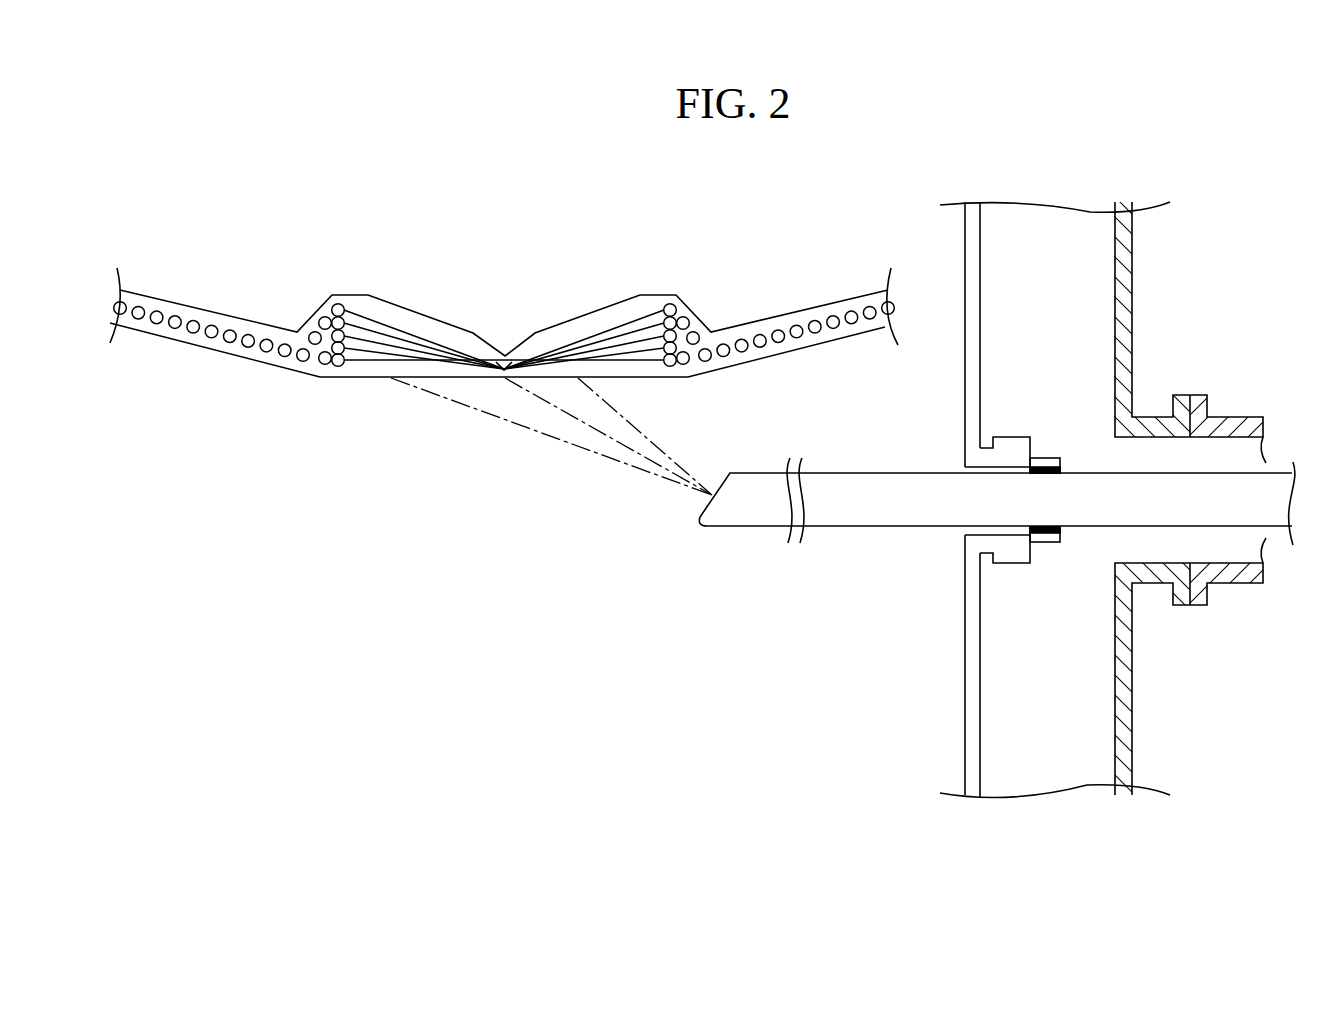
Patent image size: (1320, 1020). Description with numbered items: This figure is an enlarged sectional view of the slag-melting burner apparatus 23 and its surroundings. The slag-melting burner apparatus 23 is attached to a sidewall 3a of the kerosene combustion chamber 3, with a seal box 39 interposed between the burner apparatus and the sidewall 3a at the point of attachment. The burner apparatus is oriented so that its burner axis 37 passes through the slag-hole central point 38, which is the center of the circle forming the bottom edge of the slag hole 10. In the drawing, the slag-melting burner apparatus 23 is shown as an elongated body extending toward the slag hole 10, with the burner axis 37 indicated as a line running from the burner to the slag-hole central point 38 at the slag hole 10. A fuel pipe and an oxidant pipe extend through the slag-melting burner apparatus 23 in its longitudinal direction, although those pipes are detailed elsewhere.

The kerosene combustion chamber 3 is at (1214, 256).
The sidewall 3a is at (972, 665).
The slag hole 10 is at (520, 343).
The slag-melting burner apparatus 23 is at (775, 528).
The burner axis 37 is at (588, 427).
The slag-hole central point 38 is at (503, 378).
The seal box 39 is at (1017, 437).